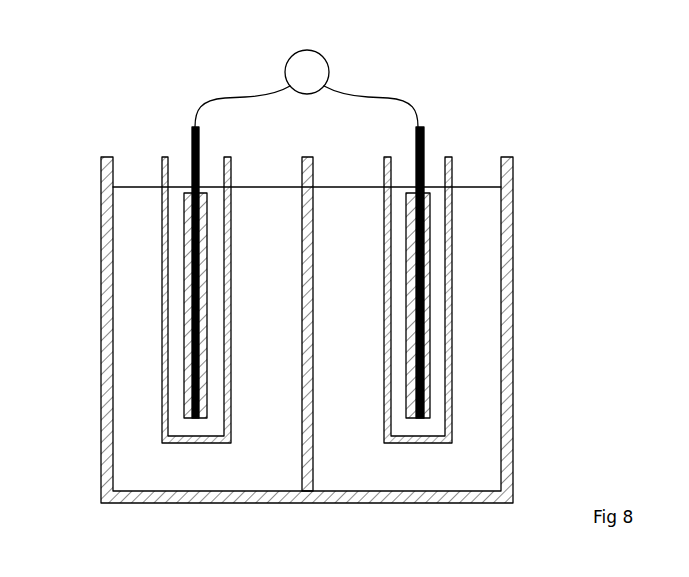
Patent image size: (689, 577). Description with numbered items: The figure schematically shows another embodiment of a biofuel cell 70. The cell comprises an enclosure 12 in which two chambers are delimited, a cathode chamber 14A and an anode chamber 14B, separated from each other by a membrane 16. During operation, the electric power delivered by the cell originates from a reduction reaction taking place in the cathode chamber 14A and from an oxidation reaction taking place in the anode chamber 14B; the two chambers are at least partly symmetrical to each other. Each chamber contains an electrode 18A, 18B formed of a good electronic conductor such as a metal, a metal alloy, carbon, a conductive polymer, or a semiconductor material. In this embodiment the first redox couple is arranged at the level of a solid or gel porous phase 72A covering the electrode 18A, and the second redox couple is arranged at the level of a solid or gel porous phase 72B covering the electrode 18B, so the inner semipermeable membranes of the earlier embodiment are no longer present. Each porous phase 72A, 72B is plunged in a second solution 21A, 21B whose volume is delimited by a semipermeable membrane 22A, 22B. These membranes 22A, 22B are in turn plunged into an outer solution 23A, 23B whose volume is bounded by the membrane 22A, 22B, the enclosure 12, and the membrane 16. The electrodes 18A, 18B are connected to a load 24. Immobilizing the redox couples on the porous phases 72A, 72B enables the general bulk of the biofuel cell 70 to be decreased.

The biofuel cell 70 is at (543, 58).
The enclosure 12 is at (513, 187).
The membrane 16 is at (313, 485).
The cathode chamber 14A is at (202, 478).
The anode chamber 14B is at (422, 478).
The electrode 18A is at (190, 132).
The electrode 18B is at (430, 135).
The second solution 21A is at (184, 360).
The second solution 21B is at (437, 338).
The semipermeable membrane 22A is at (162, 320).
The semipermeable membrane 22B is at (452, 277).
The solution 23A is at (123, 411).
The solution 23B is at (490, 410).
The load 24 is at (327, 58).
The solid or gel porous phase 72A is at (184, 237).
The solid or gel porous phase 72B is at (430, 230).